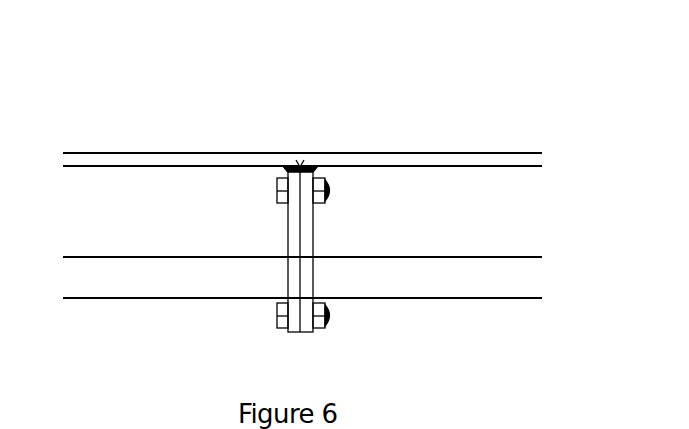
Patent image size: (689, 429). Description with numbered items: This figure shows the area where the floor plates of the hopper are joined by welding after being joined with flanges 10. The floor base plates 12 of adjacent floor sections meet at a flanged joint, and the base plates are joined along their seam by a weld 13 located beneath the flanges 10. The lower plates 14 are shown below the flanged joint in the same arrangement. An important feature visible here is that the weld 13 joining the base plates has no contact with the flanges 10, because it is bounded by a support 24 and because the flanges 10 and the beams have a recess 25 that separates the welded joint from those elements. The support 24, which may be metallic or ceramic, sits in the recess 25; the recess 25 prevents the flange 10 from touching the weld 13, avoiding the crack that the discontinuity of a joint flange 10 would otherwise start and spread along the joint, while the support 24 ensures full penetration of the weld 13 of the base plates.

The flange 10 is at (305, 267).
The floor base plate 12 is at (158, 158).
The weld 13 is at (300, 160).
The lower rail 14 is at (125, 238).
The support 24 is at (307, 165).
The recess 25 is at (287, 170).